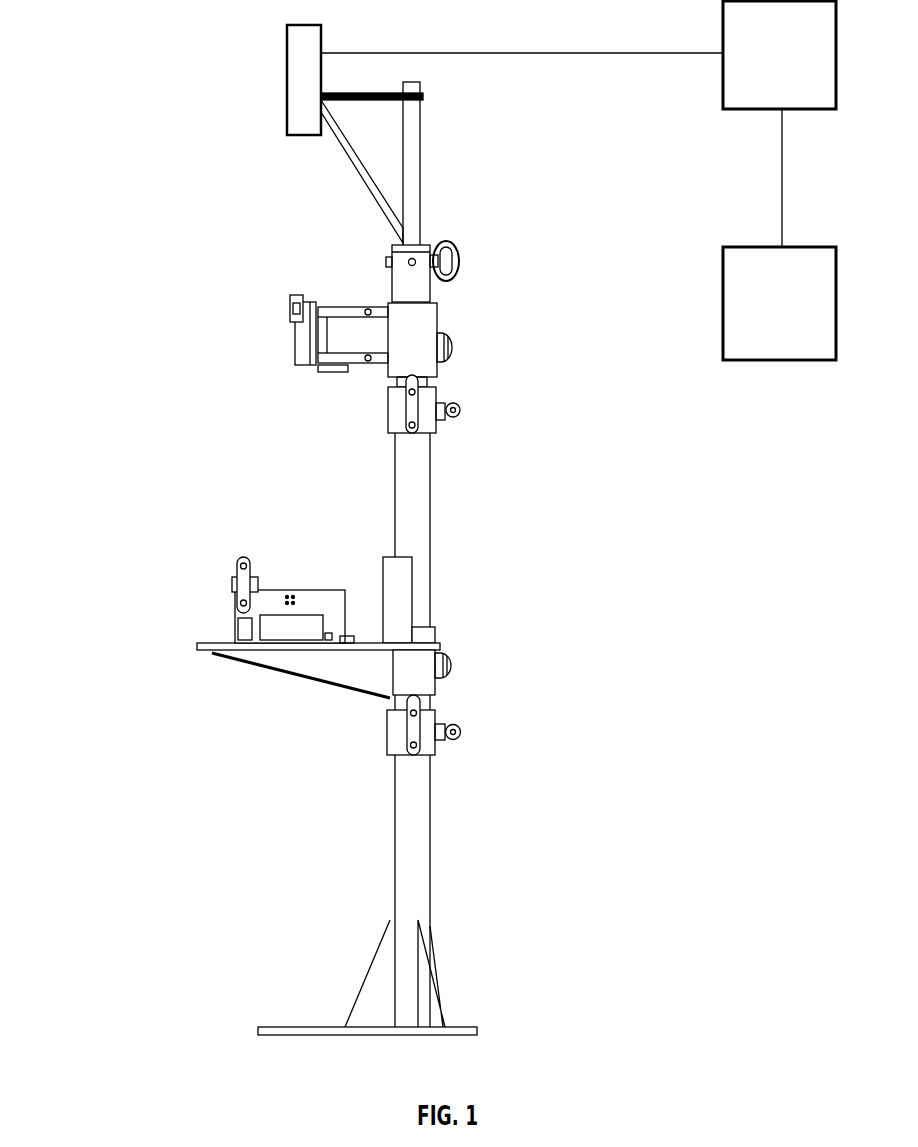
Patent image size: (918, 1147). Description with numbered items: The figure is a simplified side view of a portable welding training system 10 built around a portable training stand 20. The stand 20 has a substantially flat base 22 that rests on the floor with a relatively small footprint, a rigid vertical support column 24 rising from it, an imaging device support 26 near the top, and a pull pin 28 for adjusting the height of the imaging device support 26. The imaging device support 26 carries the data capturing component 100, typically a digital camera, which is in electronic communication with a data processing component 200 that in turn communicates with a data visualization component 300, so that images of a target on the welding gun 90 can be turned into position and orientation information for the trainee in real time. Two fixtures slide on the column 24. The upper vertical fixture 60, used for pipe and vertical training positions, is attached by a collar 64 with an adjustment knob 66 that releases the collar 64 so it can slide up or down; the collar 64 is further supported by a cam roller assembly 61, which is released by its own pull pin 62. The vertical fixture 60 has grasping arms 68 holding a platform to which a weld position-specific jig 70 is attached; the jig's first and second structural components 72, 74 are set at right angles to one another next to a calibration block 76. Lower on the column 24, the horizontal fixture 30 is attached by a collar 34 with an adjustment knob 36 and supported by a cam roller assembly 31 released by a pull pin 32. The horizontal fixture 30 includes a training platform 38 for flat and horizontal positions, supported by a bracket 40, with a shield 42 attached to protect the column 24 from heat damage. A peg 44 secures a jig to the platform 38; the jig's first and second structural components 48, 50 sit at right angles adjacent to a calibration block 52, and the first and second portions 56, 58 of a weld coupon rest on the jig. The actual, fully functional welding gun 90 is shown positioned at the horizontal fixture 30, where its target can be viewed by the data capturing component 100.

The welding training system 10 is at (138, 88).
The data capturing component 100 is at (287, 53).
The data processing component 200 is at (800, 67).
The data visualization component 300 is at (800, 315).
The imaging device support 26 is at (357, 160).
The pull pin 28 is at (460, 262).
The collar 64 is at (437, 320).
The adjustment knob 66 is at (453, 347).
The grasping arms 68 is at (358, 306).
The weld position-specific jig 70 is at (300, 380).
The first structural component 72 is at (293, 357).
The second structural component 74 is at (293, 335).
The calibration block 76 is at (293, 316).
The vertical fixture 60 is at (245, 290).
The vertical support column 24 is at (430, 555).
The cam roller assembly 61 is at (437, 432).
The pull pin 62 is at (462, 412).
The shield 42 is at (412, 590).
The training platform 38 is at (200, 647).
The bracket 40 is at (368, 694).
The second structural component 50 is at (333, 590).
The horizontal fixture 30 is at (226, 542).
The second portion of weld coupon 58 is at (313, 618).
The first portion of weld coupon 56 is at (290, 652).
The first structural component 48 is at (250, 652).
The peg 44 is at (357, 651).
The calibration block 52 is at (236, 645).
The welding gun 90 is at (235, 578).
The collar 34 is at (435, 640).
The adjustment knob 36 is at (452, 665).
The cam roller assembly 31 is at (425, 755).
The pull pin 32 is at (462, 733).
The portable training stand 20 is at (446, 877).
The base 22 is at (300, 1027).